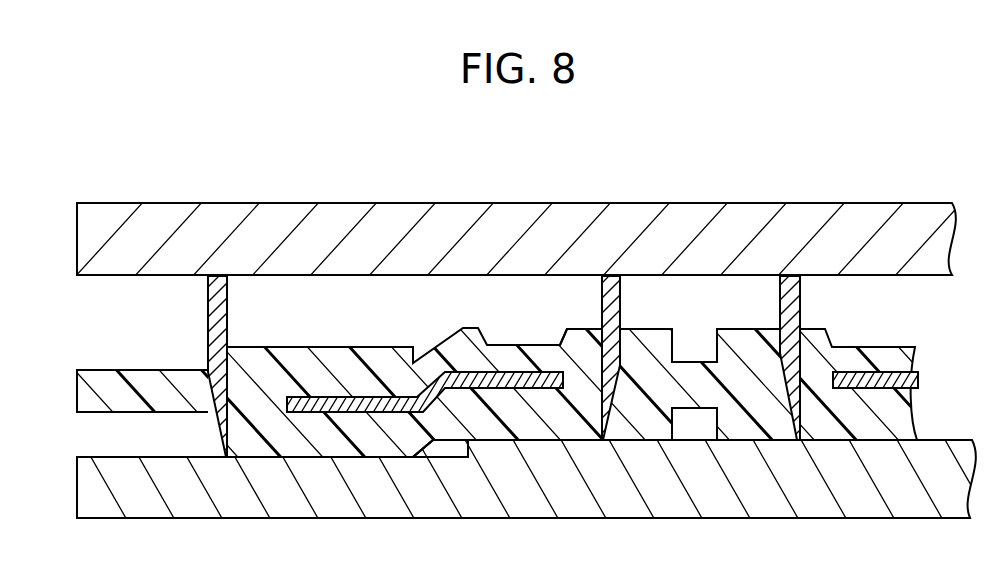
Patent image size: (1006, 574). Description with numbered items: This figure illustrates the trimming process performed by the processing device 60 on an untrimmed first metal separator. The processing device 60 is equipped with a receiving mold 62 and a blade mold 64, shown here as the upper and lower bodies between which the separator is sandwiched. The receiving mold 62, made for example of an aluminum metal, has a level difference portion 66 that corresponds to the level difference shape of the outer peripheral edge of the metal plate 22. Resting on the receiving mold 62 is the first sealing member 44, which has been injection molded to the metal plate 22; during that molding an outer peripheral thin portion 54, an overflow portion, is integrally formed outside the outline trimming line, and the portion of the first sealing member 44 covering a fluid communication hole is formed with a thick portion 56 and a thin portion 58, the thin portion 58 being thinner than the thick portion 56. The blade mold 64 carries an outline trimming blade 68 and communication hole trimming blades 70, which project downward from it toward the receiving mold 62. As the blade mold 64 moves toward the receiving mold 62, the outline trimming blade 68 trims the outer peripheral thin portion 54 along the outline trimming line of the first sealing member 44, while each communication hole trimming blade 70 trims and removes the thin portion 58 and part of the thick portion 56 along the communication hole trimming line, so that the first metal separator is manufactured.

The processing device 60 is at (583, 126).
The blade mold 64 is at (72, 202).
The receiving mold 62 is at (72, 456).
The outline trimming blade 68 is at (218, 302).
The communication hole trimming blade 70 is at (792, 302).
The first sealing member 44 is at (290, 331).
The outer peripheral thin portion 54 is at (117, 385).
The thick portion 56 is at (582, 340).
The thin portion 58 is at (692, 380).
The level difference portion 66 is at (460, 447).
The metal plate 22 is at (915, 380).